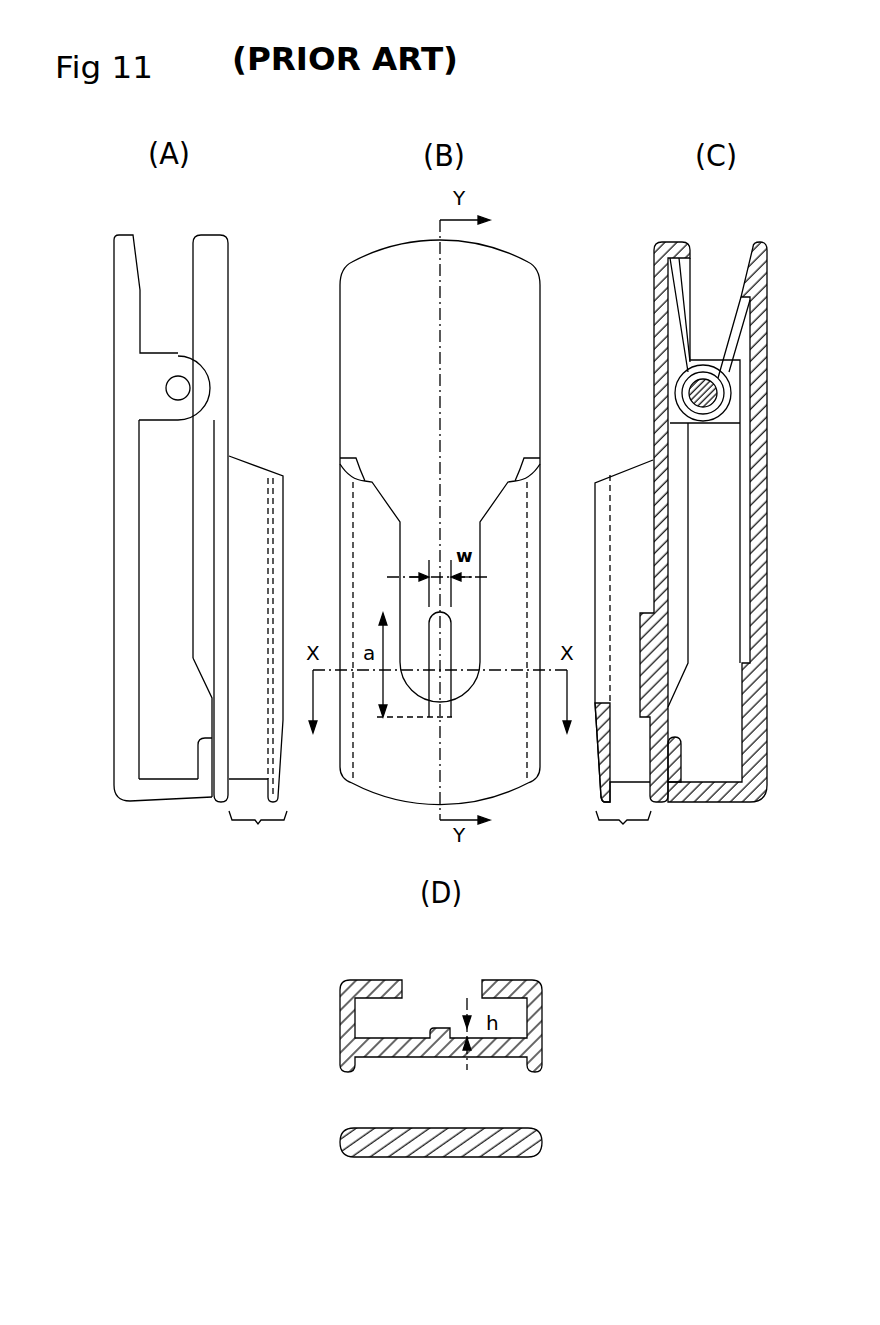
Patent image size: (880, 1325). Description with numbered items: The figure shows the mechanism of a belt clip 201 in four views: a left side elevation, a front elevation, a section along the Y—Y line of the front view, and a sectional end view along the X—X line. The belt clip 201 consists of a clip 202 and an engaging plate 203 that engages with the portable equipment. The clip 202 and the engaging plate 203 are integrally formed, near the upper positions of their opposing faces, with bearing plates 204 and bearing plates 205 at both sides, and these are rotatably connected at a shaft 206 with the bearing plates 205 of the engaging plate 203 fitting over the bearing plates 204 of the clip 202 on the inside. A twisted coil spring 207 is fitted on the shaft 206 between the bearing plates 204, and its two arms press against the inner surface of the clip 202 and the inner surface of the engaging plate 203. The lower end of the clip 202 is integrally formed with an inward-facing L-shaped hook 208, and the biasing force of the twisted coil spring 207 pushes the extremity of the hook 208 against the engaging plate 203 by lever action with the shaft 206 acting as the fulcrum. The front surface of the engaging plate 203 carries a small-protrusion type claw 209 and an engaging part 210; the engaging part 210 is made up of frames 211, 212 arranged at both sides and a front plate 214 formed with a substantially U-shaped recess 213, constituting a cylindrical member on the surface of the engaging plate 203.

The belt clip 201 is at (173, 265).
The clip 202 is at (127, 768).
The engaging plate 203 is at (213, 302).
The bearing plates 204 is at (160, 402).
The bearing plates 205 is at (183, 355).
The shaft 206 is at (190, 386).
The twisted coil spring 207 is at (688, 367).
The L-shaped hook 208 is at (178, 792).
The claw 209 is at (445, 680).
The engaging part 210 is at (261, 824).
The frame 211 is at (246, 490).
The frame 212 is at (530, 458).
The U-shaped recess 213 is at (418, 553).
The front plate 214 is at (277, 619).